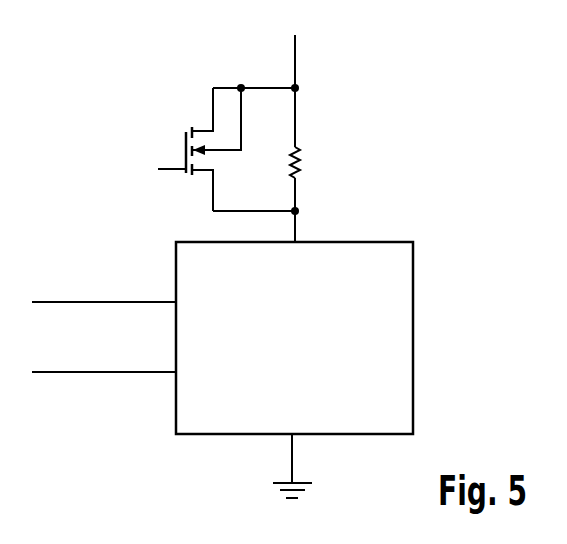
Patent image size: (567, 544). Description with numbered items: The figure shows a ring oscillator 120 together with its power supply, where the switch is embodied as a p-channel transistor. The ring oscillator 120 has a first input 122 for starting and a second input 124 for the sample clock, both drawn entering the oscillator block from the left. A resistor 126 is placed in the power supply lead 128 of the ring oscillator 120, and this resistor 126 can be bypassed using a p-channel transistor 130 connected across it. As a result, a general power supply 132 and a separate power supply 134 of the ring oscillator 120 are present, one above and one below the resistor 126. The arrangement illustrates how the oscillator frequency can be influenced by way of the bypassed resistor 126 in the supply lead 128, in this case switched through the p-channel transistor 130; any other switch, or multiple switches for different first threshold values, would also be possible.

The ring oscillator 120 is at (413, 340).
The first input 122 is at (103, 302).
The second input 124 is at (103, 372).
The resistor 126 is at (300, 153).
The power supply lead 128 is at (295, 41).
The p-channel transistor 130 is at (185, 143).
The general power supply 132 is at (295, 73).
The power supply of ring oscillator 134 is at (297, 242).